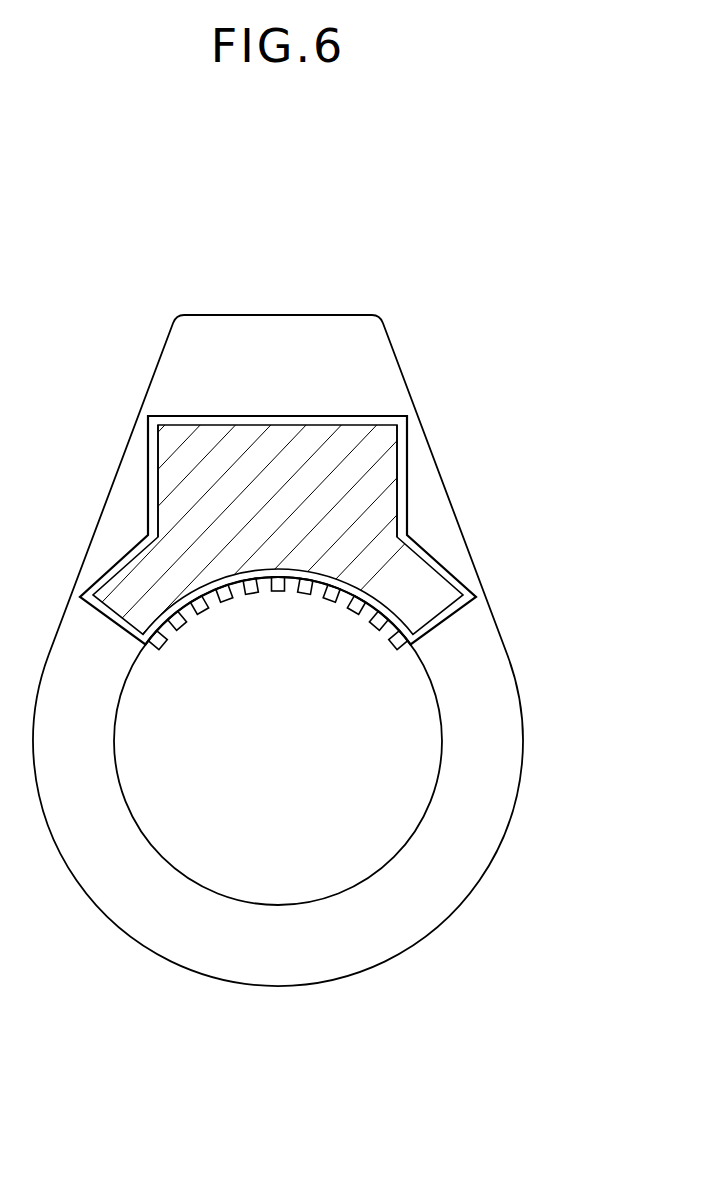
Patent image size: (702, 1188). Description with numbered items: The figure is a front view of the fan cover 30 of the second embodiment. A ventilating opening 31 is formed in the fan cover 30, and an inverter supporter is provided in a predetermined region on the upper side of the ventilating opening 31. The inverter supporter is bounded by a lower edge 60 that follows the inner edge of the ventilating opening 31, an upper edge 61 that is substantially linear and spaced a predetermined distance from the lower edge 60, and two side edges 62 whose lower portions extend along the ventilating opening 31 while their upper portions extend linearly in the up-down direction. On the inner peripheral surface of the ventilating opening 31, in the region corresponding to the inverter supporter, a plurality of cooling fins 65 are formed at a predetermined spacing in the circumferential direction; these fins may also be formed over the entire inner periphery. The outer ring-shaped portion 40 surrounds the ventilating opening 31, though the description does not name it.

The fan cover 30 is at (317, 315).
The ventilating opening 31 is at (308, 902).
The ring portion 40 is at (478, 680).
The lower edge 60 is at (383, 607).
The upper edge 61 is at (210, 416).
The side edges 62 is at (148, 495).
The cooling fins 65 is at (200, 613).